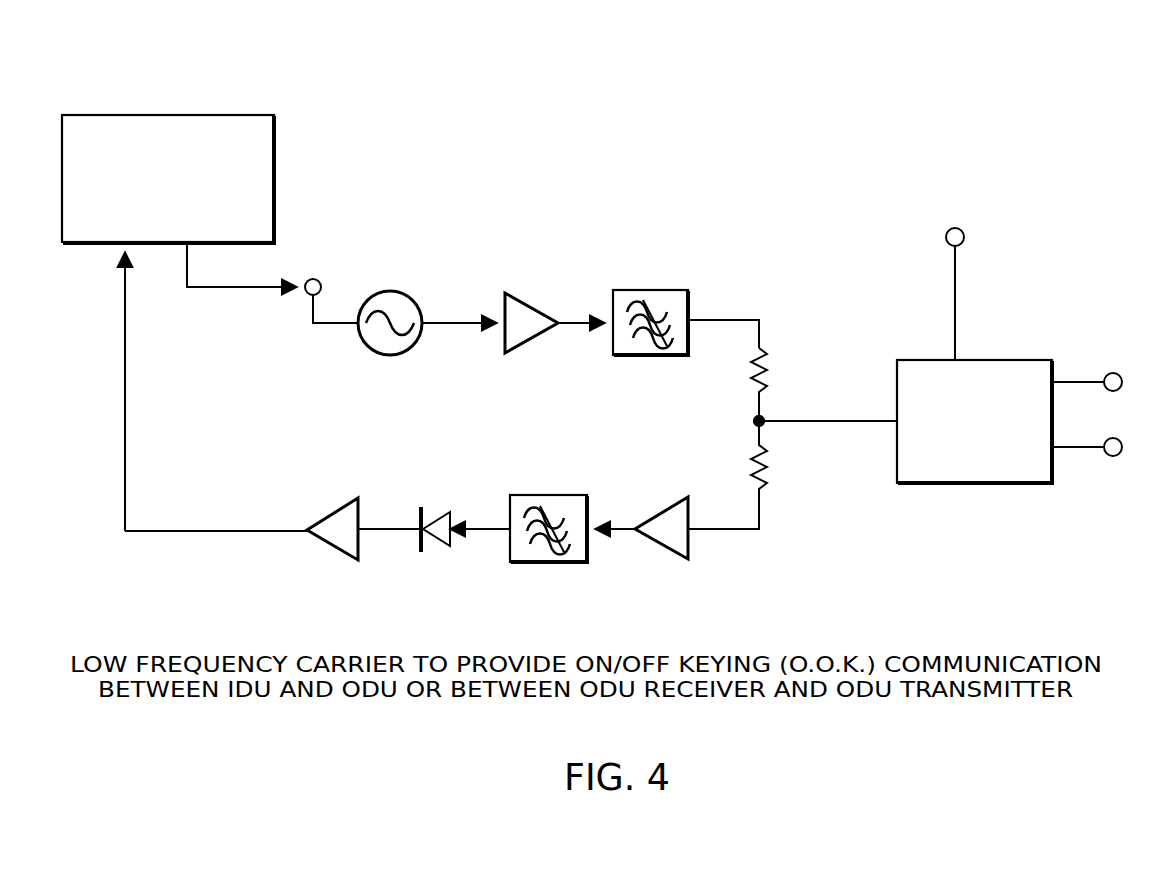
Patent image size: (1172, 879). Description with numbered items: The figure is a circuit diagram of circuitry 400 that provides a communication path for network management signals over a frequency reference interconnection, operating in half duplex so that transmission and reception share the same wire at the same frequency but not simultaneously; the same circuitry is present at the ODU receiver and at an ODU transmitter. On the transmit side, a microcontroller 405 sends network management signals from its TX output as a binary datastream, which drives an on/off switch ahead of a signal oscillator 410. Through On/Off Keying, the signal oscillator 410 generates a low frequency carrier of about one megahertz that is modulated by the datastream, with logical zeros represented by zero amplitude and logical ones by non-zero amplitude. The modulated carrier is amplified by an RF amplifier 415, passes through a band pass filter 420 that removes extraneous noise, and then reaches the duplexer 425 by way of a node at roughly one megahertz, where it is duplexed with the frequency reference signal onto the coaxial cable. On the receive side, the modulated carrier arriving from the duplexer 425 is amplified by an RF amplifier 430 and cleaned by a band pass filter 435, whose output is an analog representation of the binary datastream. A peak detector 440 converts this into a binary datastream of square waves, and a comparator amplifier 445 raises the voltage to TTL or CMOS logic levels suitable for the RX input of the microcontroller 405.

The low frequency carrier communication system 400 is at (759, 49).
The microcontroller 405 is at (232, 115).
The signal oscillator 410 is at (399, 294).
The RF amplifier 415 is at (530, 306).
The band pass filter 420 is at (686, 290).
The duplexer 425 is at (1016, 360).
The RF amplifier 430 is at (658, 546).
The band pass filter 435 is at (554, 562).
The peak detector 440 is at (433, 548).
The amplifier 445 is at (330, 550).